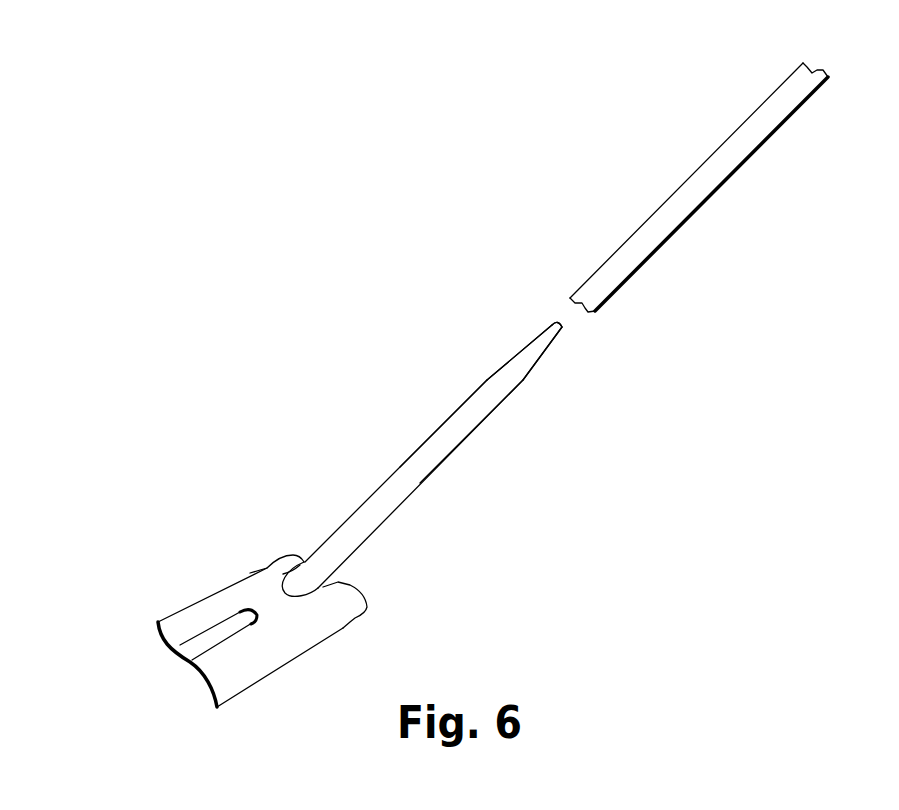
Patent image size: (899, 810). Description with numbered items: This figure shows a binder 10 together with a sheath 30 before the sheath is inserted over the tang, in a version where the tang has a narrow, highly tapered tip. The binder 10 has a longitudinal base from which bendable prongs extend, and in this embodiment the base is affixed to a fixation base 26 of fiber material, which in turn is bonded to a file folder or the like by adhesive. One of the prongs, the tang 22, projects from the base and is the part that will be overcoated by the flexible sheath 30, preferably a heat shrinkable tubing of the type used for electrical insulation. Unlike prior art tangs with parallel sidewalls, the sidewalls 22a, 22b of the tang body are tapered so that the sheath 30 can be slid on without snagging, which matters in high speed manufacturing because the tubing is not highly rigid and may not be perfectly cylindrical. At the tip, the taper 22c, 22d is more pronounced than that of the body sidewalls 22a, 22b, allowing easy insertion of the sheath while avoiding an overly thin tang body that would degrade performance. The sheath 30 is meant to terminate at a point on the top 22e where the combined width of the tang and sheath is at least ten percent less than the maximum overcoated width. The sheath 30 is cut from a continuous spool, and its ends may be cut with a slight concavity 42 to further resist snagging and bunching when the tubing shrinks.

The binder 10 is at (280, 668).
The fixation base 26 is at (327, 613).
The tang 22 is at (413, 490).
The sidewall 22a is at (490, 414).
The sidewall 22b is at (455, 414).
The taper 22c is at (548, 347).
The taper 22d is at (530, 344).
The top 22e is at (562, 326).
The sheath 30 is at (722, 183).
The concavity 42 is at (813, 72).